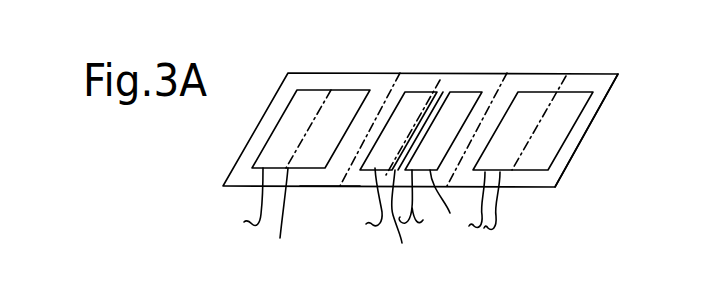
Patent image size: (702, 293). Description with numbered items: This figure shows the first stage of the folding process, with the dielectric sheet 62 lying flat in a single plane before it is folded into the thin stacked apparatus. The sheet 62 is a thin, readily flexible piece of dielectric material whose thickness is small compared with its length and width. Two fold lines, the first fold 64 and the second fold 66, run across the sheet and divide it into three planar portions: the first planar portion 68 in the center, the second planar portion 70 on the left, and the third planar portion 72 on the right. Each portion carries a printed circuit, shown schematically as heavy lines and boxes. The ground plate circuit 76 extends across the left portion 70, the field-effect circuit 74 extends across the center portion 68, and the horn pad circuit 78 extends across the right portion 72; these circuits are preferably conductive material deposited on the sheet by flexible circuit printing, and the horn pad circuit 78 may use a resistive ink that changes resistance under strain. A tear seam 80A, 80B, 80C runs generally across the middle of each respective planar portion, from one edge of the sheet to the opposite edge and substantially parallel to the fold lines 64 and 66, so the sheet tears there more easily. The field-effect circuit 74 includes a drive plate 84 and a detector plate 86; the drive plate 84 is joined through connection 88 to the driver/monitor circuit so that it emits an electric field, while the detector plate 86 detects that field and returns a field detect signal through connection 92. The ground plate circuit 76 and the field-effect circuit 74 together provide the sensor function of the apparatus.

The dielectric sheet 62 is at (224, 161).
The first fold 64 is at (340, 175).
The second fold 66 is at (497, 78).
The first planar portion 68 is at (406, 80).
The second planar portion 70 is at (300, 73).
The third planar portion 72 is at (618, 74).
The field-effect circuit 74 is at (404, 119).
The ground plate circuit 76 is at (316, 92).
The horn pad circuit 78 is at (557, 130).
The tear seam 80A is at (398, 216).
The tear seam 80B is at (277, 214).
The tear seam 80C is at (508, 172).
The drive plate 84 is at (378, 169).
The detector plate 86 is at (445, 203).
The connection 88 is at (380, 211).
The connection 92 is at (423, 220).